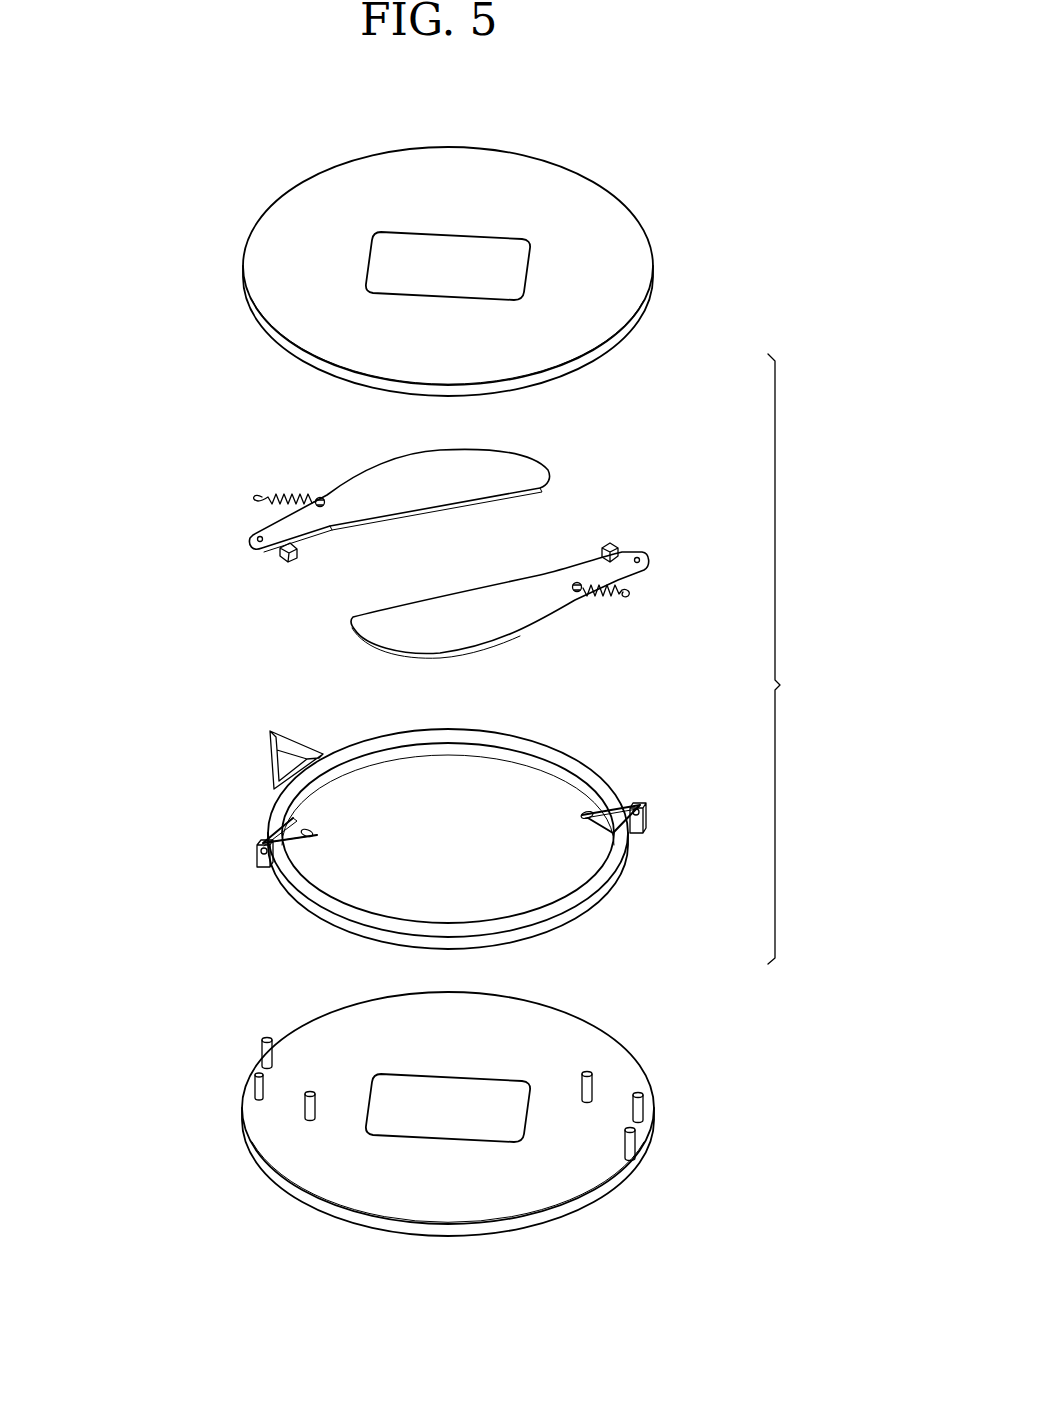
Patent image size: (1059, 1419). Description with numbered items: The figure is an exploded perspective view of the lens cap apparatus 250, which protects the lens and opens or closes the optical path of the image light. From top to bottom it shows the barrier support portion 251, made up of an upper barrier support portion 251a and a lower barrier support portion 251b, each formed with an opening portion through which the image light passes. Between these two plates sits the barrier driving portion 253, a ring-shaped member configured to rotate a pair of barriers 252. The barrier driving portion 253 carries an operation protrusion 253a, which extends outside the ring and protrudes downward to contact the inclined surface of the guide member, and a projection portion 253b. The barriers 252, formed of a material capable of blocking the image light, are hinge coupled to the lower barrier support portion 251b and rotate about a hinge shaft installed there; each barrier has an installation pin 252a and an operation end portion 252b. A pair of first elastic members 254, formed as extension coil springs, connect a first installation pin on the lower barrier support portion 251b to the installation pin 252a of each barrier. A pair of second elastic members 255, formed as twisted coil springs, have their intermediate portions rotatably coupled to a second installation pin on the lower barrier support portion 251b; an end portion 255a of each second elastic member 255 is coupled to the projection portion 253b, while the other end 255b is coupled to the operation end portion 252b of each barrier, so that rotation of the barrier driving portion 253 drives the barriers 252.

The lens cap apparatus 250 is at (723, 121).
The barrier support portion 251 is at (798, 659).
The upper barrier support portion 251a is at (630, 333).
The lower barrier support portion 251b is at (590, 1042).
The barrier 252 is at (445, 495).
The installation pin 252a is at (320, 497).
The operation end portion 252b is at (280, 557).
The barrier driving portion 253 is at (355, 750).
The operation protrusion 253a is at (268, 778).
The projection portion 253b is at (258, 838).
The first elastic member 254 is at (262, 495).
The second elastic member 255 is at (317, 835).
The end portion 255a is at (283, 855).
The second end of elastic member 255b is at (288, 822).